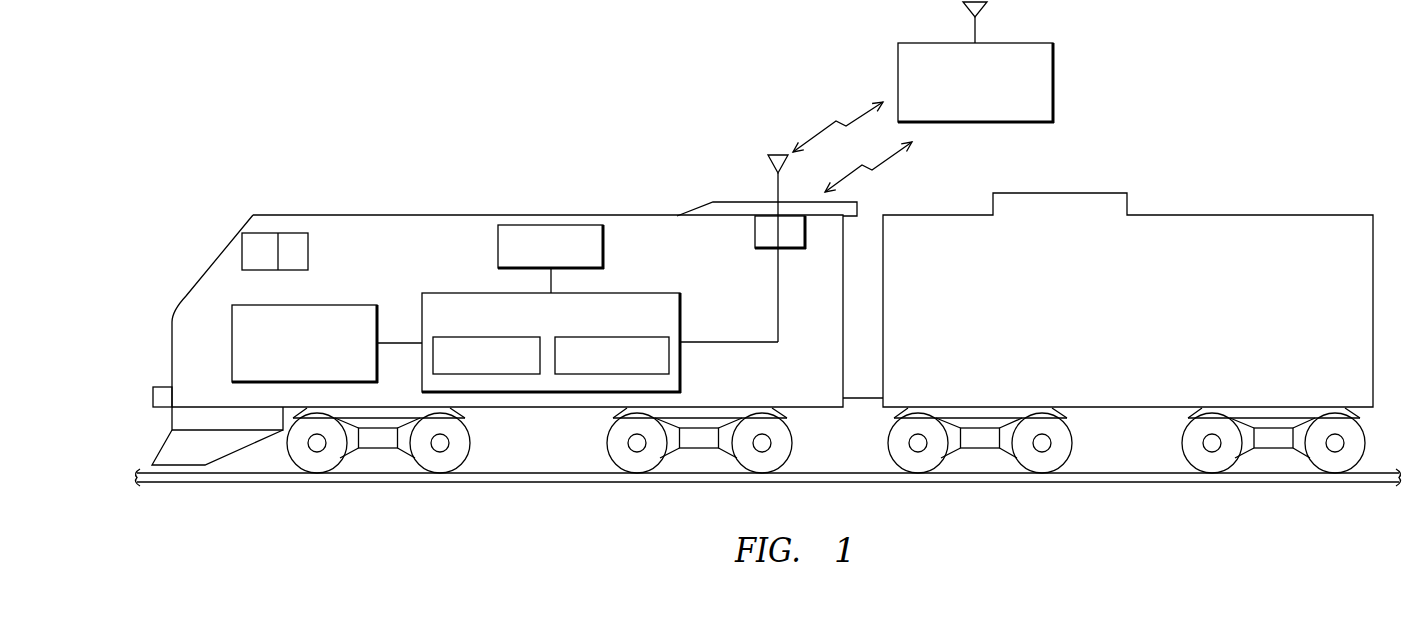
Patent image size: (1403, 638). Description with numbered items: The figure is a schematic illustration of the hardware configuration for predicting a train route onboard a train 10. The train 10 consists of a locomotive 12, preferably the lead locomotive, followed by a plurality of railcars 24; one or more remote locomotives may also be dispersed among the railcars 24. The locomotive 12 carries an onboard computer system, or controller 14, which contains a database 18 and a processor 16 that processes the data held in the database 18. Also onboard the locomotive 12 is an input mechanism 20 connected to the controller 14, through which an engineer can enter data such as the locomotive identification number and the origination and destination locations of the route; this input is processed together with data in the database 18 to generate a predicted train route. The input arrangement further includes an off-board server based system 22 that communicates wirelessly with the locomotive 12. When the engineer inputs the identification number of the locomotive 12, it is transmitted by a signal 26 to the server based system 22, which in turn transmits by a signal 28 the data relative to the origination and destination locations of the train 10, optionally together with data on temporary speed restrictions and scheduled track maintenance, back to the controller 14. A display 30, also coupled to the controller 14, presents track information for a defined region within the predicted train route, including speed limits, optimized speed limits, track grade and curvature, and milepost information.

The train 10 is at (415, 130).
The locomotive 12 is at (337, 215).
The onboard computer system 14 is at (581, 321).
The processor 16 is at (669, 355).
The database 18 is at (468, 337).
The input mechanism 20 is at (340, 305).
The off-board server based system 22 is at (1068, 60).
The railcars 24 is at (1250, 215).
The signal 26 is at (862, 108).
The signal 28 is at (893, 153).
The display 30 is at (552, 225).